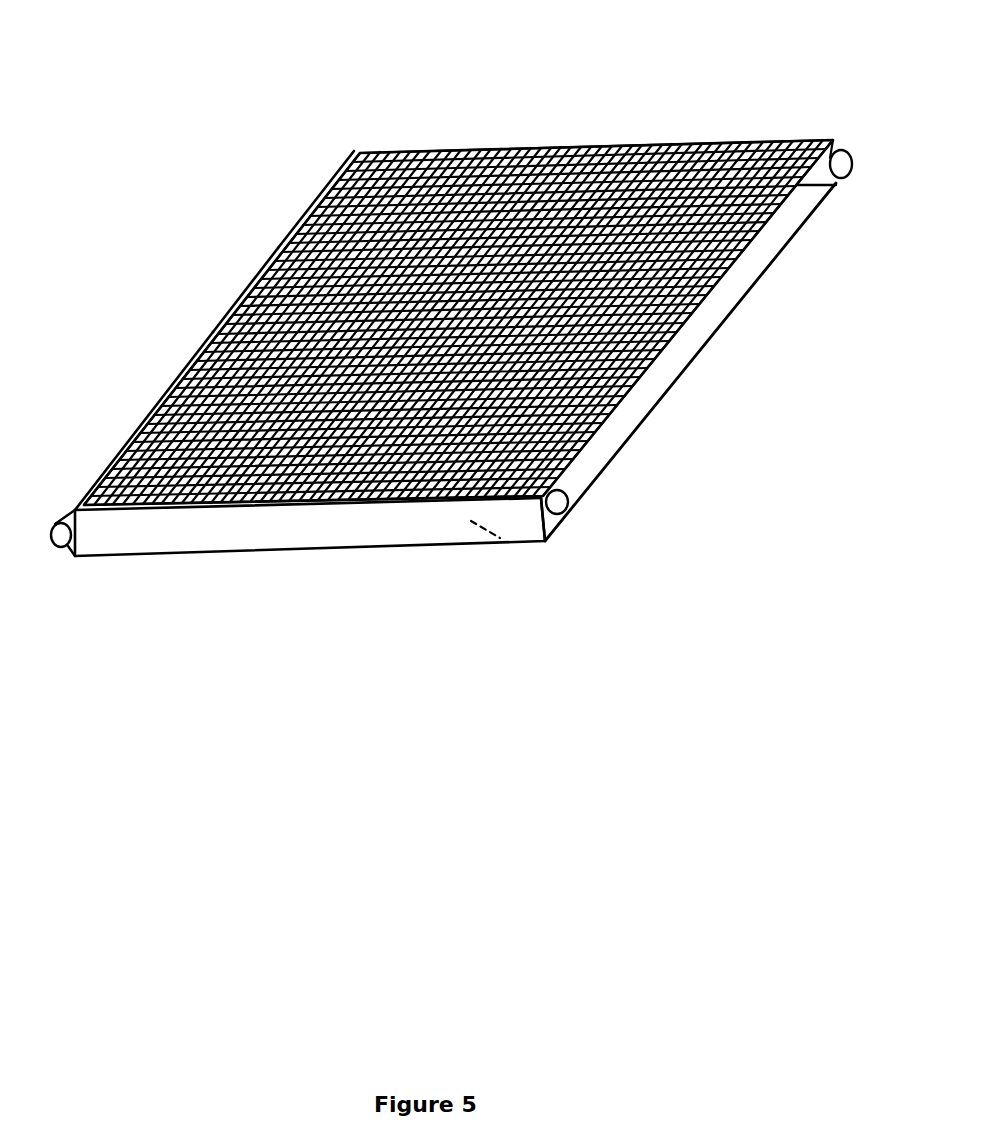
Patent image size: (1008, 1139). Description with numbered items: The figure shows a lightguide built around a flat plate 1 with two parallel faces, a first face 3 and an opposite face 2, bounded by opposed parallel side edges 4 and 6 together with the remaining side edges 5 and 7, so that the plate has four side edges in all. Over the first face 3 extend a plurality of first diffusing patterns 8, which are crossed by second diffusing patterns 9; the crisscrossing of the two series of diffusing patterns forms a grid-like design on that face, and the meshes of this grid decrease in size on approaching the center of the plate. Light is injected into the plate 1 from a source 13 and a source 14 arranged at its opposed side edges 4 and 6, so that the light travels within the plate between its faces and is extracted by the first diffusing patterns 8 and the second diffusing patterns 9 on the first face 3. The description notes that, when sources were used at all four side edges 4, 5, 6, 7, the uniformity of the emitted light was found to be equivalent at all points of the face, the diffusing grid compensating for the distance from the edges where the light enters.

The plate 1 is at (278, 523).
The face 2 is at (497, 536).
The first face 3 is at (288, 217).
The side edge 4 is at (753, 247).
The side edge 5 is at (528, 132).
The side edge 6 is at (208, 318).
The side edge 7 is at (120, 525).
The first diffusing patterns 8 is at (390, 337).
The second diffusing patterns 9 is at (427, 490).
The source 13 is at (652, 365).
The source 14 is at (217, 308).